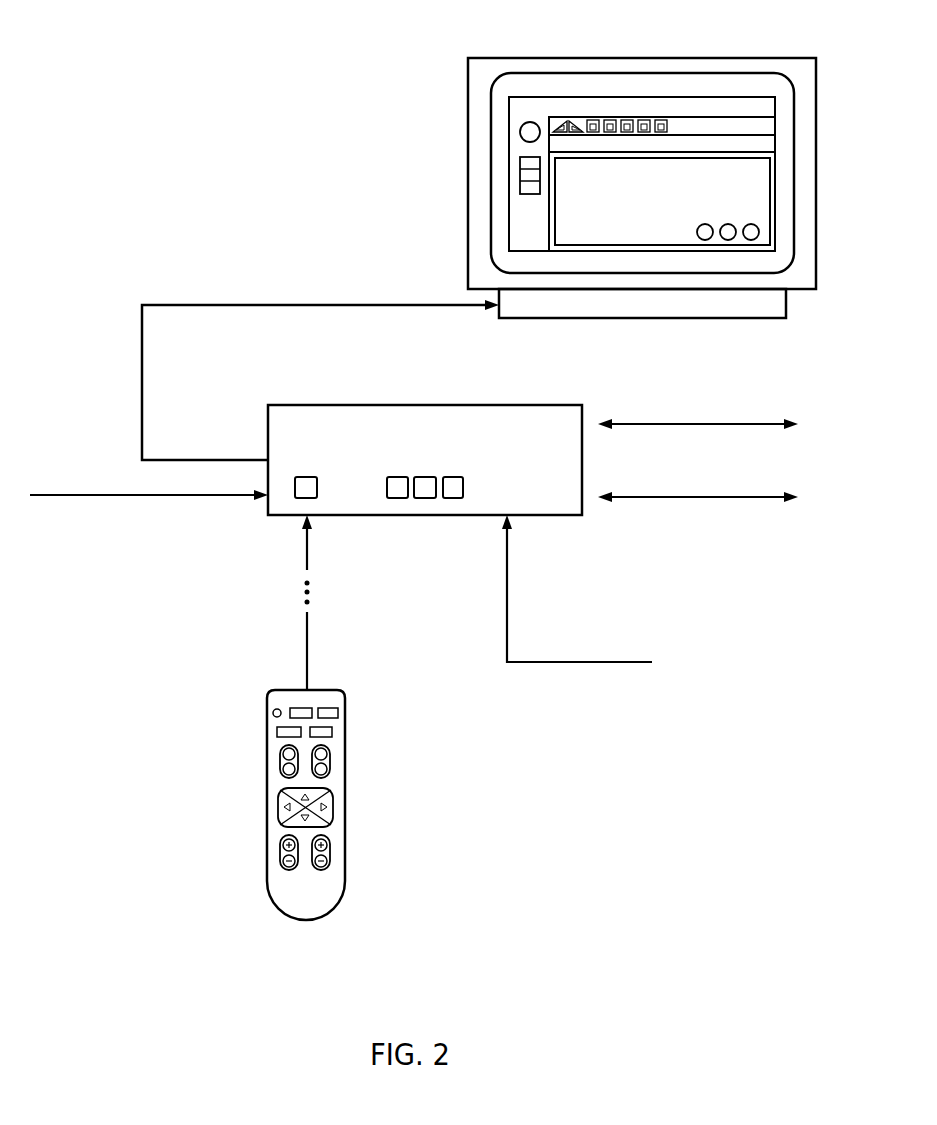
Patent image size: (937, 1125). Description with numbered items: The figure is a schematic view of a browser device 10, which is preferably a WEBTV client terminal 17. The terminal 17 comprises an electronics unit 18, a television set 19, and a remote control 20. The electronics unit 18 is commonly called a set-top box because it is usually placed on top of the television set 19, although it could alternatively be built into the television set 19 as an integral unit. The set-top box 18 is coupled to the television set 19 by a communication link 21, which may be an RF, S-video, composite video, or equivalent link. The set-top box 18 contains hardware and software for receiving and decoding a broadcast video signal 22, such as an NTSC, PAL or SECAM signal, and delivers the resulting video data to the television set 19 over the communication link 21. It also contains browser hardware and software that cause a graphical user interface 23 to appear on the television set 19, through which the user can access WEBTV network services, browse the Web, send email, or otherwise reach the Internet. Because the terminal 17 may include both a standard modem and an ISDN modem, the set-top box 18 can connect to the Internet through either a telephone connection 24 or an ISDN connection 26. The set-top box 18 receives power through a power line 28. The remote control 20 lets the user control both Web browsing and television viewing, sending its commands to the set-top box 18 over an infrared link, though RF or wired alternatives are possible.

The browser device 10 is at (148, 100).
The client terminal 17 is at (320, 260).
The electronics unit 18 is at (558, 507).
The television set 19 is at (817, 183).
The remote control 20 is at (316, 913).
The communication link 21 is at (140, 327).
The broadcast video signal 22 is at (227, 498).
The graphical user interface 23 is at (662, 95).
The telephone connection 24 is at (748, 424).
The ISDN connection 26 is at (738, 497).
The power line 28 is at (627, 662).